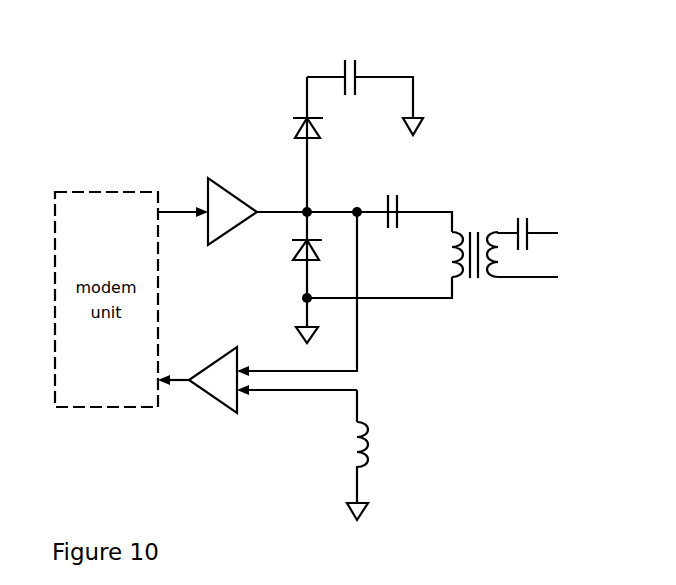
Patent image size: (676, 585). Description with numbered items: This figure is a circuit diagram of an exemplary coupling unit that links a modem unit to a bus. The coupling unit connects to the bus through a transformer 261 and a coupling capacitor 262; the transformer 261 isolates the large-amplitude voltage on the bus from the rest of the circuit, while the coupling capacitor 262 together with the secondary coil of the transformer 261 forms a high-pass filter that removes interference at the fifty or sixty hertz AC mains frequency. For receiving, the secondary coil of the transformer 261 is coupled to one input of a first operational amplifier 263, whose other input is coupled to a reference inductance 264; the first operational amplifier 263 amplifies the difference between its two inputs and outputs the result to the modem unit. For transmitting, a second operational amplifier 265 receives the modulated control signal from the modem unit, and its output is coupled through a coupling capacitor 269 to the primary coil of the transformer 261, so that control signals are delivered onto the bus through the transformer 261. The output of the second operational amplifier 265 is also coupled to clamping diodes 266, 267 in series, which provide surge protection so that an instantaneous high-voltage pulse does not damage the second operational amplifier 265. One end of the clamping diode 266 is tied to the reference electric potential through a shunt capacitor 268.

The transformer 261 is at (475, 219).
The coupling capacitor 262 is at (529, 222).
The first operational amplifier 263 is at (238, 404).
The reference inductance 264 is at (372, 450).
The second operational amplifier 265 is at (207, 200).
The clamping diode 266 is at (295, 129).
The clamping diode 267 is at (300, 262).
The shunt capacitor 268 is at (357, 70).
The coupling capacitor 269 is at (398, 196).